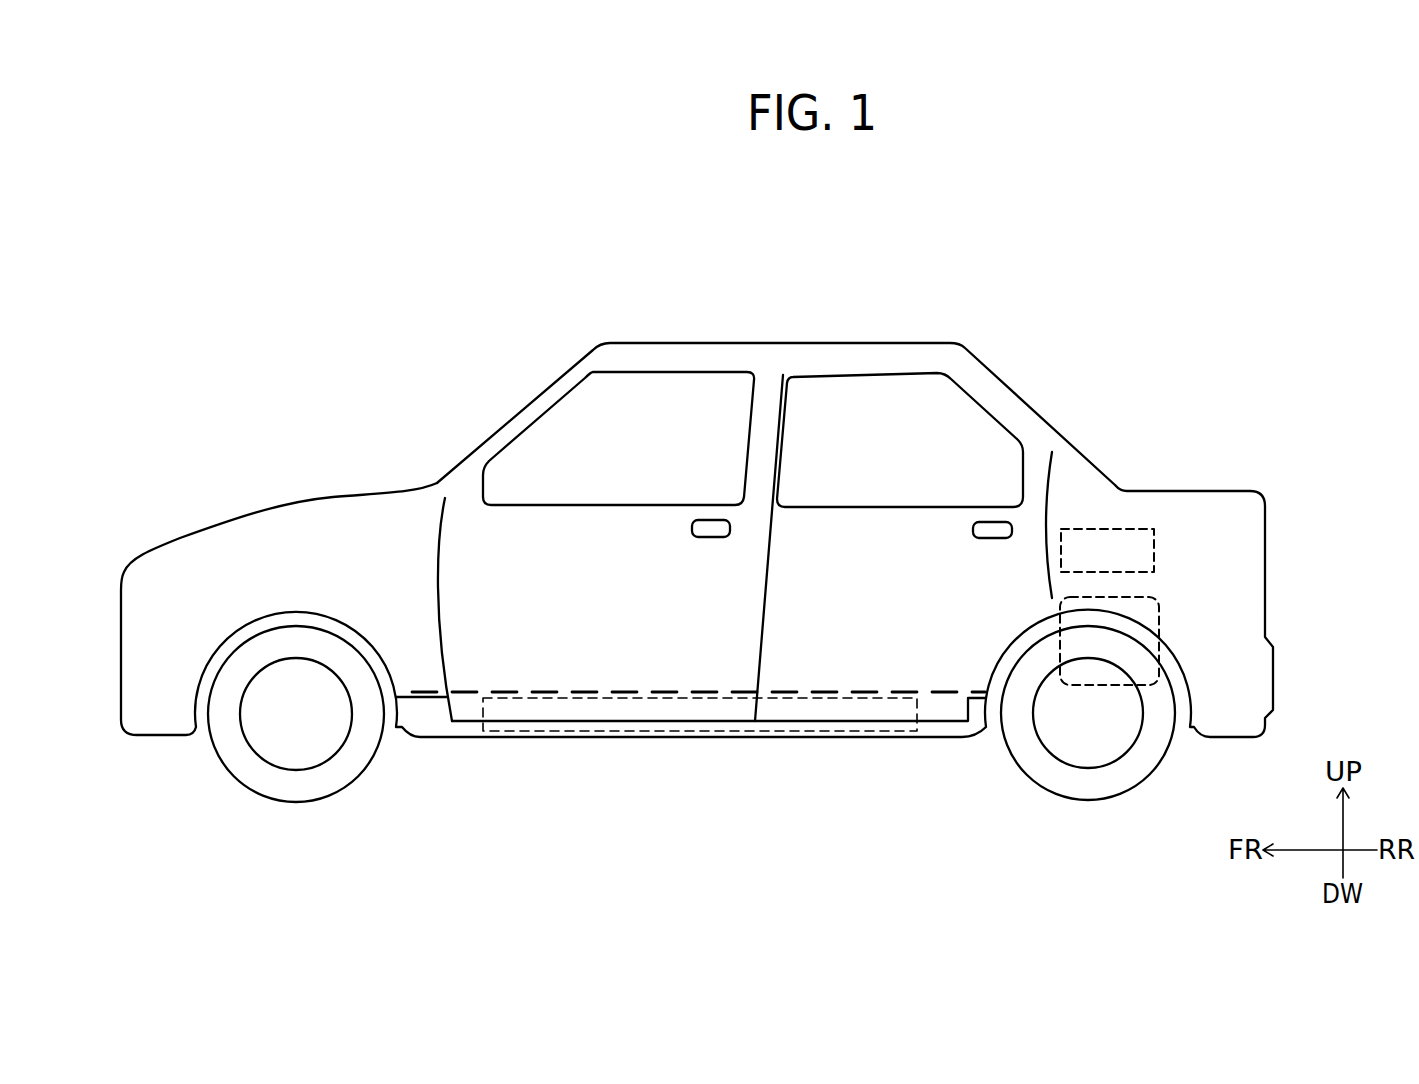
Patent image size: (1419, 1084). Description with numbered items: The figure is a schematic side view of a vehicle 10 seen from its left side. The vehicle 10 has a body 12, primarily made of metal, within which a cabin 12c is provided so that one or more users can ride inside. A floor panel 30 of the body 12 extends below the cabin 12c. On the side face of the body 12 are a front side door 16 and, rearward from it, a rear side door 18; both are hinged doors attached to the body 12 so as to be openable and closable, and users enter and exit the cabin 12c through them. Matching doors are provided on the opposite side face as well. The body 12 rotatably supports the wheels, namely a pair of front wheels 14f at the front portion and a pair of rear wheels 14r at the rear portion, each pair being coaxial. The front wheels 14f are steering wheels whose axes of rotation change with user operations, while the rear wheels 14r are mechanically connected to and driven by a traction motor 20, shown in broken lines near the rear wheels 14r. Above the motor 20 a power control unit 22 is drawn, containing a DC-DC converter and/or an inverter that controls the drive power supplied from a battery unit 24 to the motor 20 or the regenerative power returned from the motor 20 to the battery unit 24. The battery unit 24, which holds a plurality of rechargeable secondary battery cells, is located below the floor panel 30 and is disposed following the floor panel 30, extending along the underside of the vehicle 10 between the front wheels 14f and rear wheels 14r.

The vehicle 10 is at (1210, 320).
The body 12 is at (793, 343).
The cabin 12c is at (565, 430).
The front wheels 14f is at (262, 772).
The rear wheels 14r is at (1088, 780).
The front side door 16 is at (500, 575).
The rear side door 18 is at (913, 557).
The motor 20 is at (1162, 612).
The power control unit 22 is at (1158, 553).
The battery unit 24 is at (827, 742).
The floor panel 30 is at (932, 697).